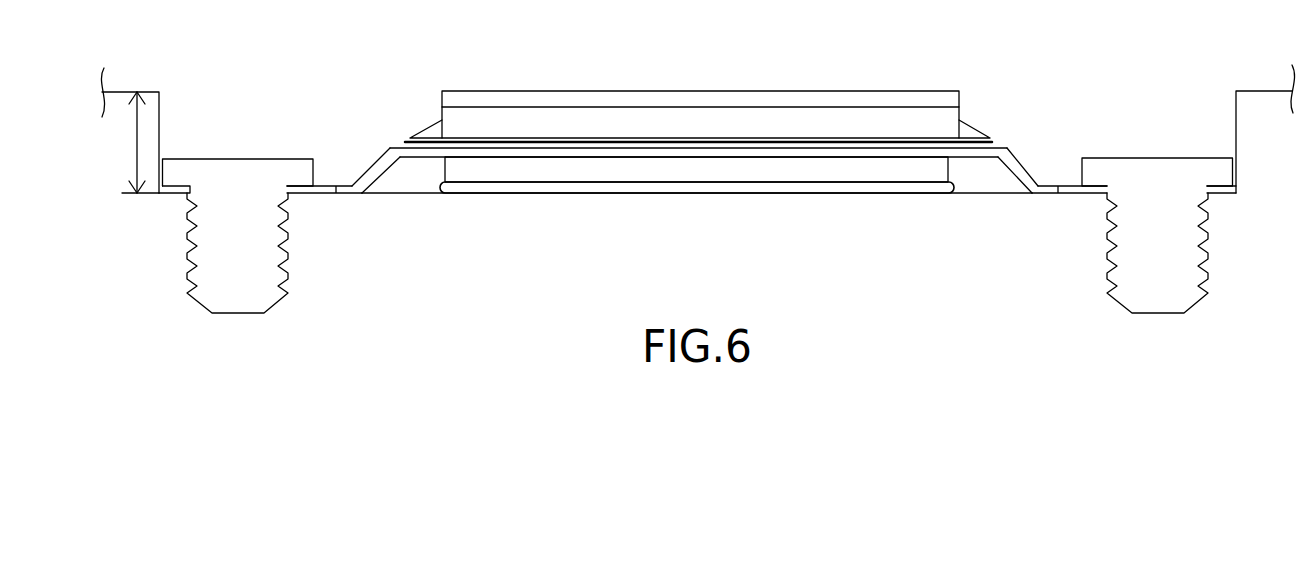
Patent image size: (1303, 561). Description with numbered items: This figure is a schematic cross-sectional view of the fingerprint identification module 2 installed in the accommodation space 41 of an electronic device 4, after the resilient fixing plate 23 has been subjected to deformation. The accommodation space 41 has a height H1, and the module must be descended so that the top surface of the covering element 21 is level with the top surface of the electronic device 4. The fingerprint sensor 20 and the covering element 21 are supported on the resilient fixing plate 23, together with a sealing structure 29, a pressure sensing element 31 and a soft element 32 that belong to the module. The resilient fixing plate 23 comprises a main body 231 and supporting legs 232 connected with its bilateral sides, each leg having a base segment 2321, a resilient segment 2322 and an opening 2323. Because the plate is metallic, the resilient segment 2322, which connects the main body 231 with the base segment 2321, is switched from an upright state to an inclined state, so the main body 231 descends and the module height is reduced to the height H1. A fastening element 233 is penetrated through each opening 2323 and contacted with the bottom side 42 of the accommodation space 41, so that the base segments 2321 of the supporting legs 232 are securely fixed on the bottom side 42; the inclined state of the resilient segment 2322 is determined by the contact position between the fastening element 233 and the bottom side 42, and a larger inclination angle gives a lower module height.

The fingerprint identification module 2 is at (729, 39).
The fingerprint sensor 20 is at (805, 118).
The covering element 21 is at (583, 100).
The resilient fixing plate 23 is at (402, 148).
The main body 231 is at (618, 152).
The supporting leg 232 is at (1020, 163).
The base segment 2321 is at (175, 194).
The resilient segment 2322 is at (377, 168).
The opening 2323 is at (312, 190).
The fastening element 233 is at (240, 168).
The sealing structure 29 is at (967, 133).
The pressure sensing element 31 is at (840, 167).
The soft element 32 is at (775, 187).
The electronic device 4 is at (1258, 89).
The accommodation space 41 is at (1133, 137).
The bottom side 42 is at (1212, 193).
The height of the accommodation space H1 is at (130, 142).